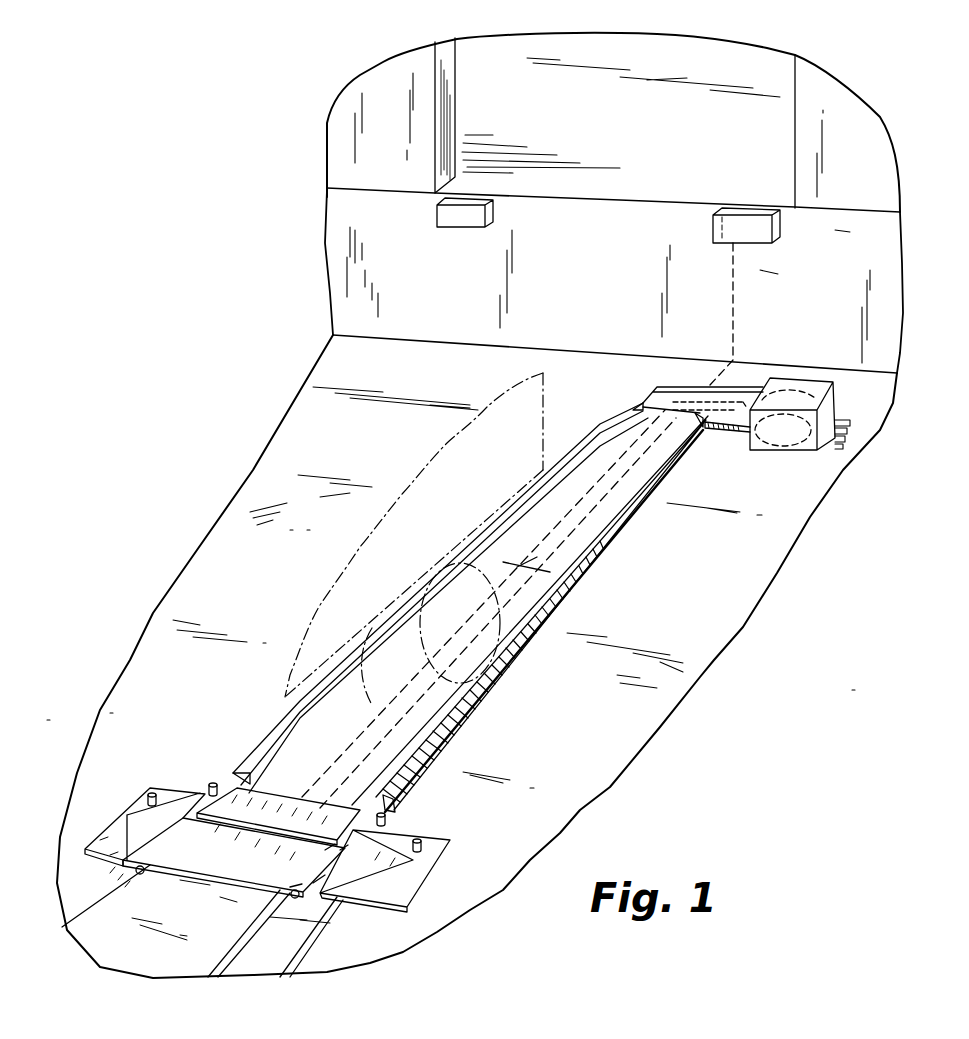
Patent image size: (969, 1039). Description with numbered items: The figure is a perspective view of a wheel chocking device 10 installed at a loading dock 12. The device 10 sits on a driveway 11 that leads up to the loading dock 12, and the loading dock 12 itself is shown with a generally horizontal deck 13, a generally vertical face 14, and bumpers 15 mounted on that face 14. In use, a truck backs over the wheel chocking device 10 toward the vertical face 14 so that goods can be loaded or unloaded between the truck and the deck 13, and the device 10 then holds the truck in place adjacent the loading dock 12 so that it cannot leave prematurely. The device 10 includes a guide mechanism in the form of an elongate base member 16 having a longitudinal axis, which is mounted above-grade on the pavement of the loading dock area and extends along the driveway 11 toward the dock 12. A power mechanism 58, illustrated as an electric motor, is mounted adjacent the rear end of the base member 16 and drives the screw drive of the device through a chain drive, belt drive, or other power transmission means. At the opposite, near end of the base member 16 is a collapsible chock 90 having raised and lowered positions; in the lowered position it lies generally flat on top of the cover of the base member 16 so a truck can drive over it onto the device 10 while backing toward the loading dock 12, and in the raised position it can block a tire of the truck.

The wheel chocking device 10 is at (513, 723).
The driveway 11 is at (715, 561).
The loading dock 12 is at (372, 75).
The deck 13 is at (660, 134).
The vertical face 14 is at (635, 269).
The bumpers 15 is at (462, 222).
The base member 16 is at (582, 598).
The power mechanism 58 is at (785, 440).
The collapsible chock 90 is at (198, 772).